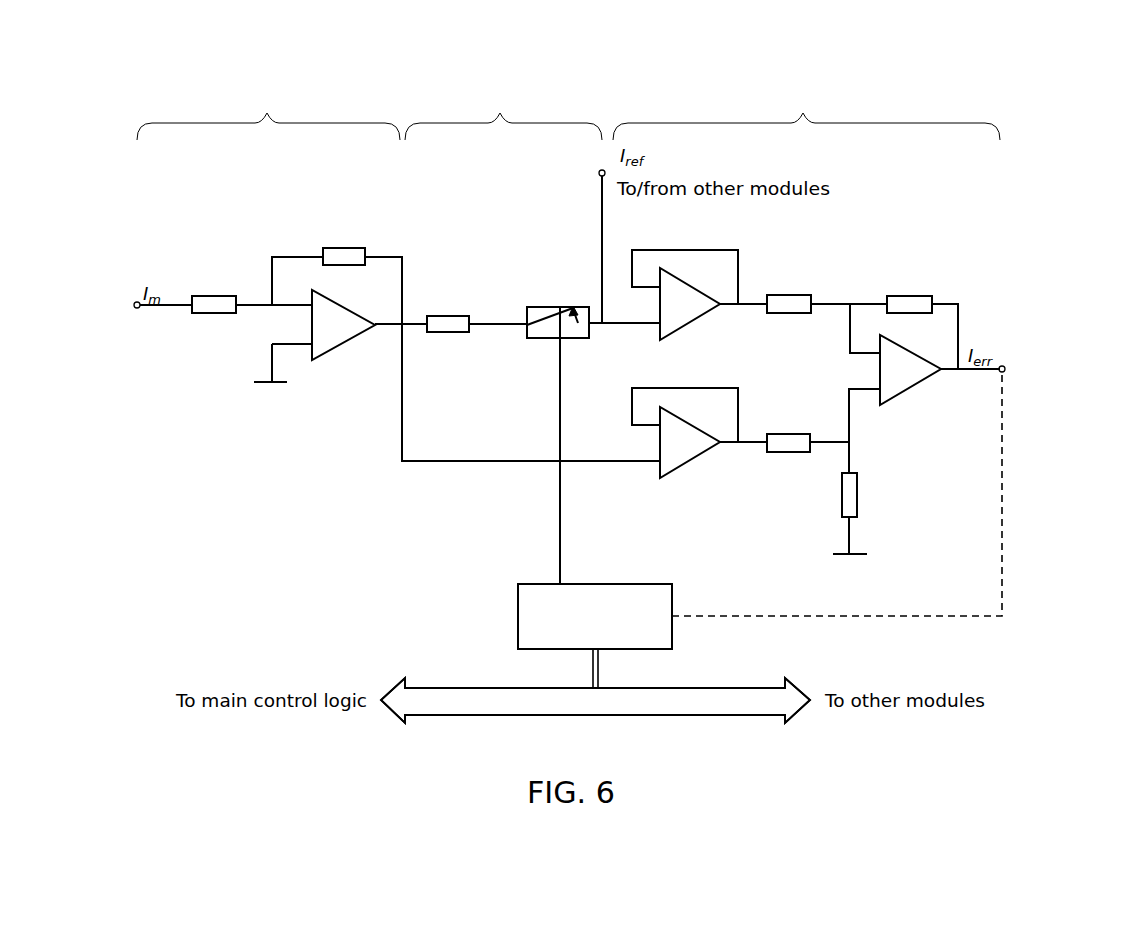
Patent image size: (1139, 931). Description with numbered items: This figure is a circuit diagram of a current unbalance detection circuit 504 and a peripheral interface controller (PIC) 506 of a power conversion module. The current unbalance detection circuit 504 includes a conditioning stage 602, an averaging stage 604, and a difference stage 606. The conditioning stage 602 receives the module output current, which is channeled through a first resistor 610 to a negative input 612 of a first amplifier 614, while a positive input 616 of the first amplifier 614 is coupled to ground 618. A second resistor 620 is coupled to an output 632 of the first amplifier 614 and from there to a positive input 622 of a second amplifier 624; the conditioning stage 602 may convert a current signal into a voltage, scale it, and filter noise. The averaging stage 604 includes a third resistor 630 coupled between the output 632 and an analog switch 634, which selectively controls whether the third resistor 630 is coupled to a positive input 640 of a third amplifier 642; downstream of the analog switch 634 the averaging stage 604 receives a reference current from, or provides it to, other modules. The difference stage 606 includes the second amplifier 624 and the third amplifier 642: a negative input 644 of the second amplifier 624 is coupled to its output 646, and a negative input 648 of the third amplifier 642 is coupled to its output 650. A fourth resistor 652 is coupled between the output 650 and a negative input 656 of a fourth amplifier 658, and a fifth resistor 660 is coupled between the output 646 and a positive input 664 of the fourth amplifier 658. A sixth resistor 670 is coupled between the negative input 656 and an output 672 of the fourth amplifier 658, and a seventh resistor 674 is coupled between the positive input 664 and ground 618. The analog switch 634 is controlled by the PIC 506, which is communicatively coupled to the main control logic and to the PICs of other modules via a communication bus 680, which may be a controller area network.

The current unbalance detection circuit 504 is at (1030, 120).
The peripheral interface controller 506 is at (518, 614).
The conditioning stage 602 is at (268, 113).
The averaging stage 604 is at (503, 113).
The difference stage 606 is at (806, 112).
The first resistor 610 is at (212, 296).
The negative input 612 is at (300, 312).
The first amplifier 614 is at (347, 297).
The positive input 616 is at (310, 346).
The ground 618 is at (263, 384).
The second resistor 620 is at (343, 248).
The positive input 622 is at (657, 462).
The second amplifier 624 is at (692, 413).
The third resistor 630 is at (448, 316).
The output 632 is at (378, 333).
The analog switch 634 is at (540, 340).
The positive input 640 is at (655, 326).
The third amplifier 642 is at (690, 318).
The negative input 644 is at (657, 424).
The output 646 is at (728, 446).
The negative input 648 is at (648, 284).
The output 650 is at (725, 293).
The fourth resistor 652 is at (790, 295).
The negative input 656 is at (878, 354).
The fourth amplifier 658 is at (913, 348).
The fifth resistor 660 is at (790, 453).
The positive input 664 is at (878, 392).
The sixth resistor 670 is at (908, 296).
The output 672 is at (947, 373).
The seventh resistor 674 is at (858, 494).
The communication bus 680 is at (752, 716).